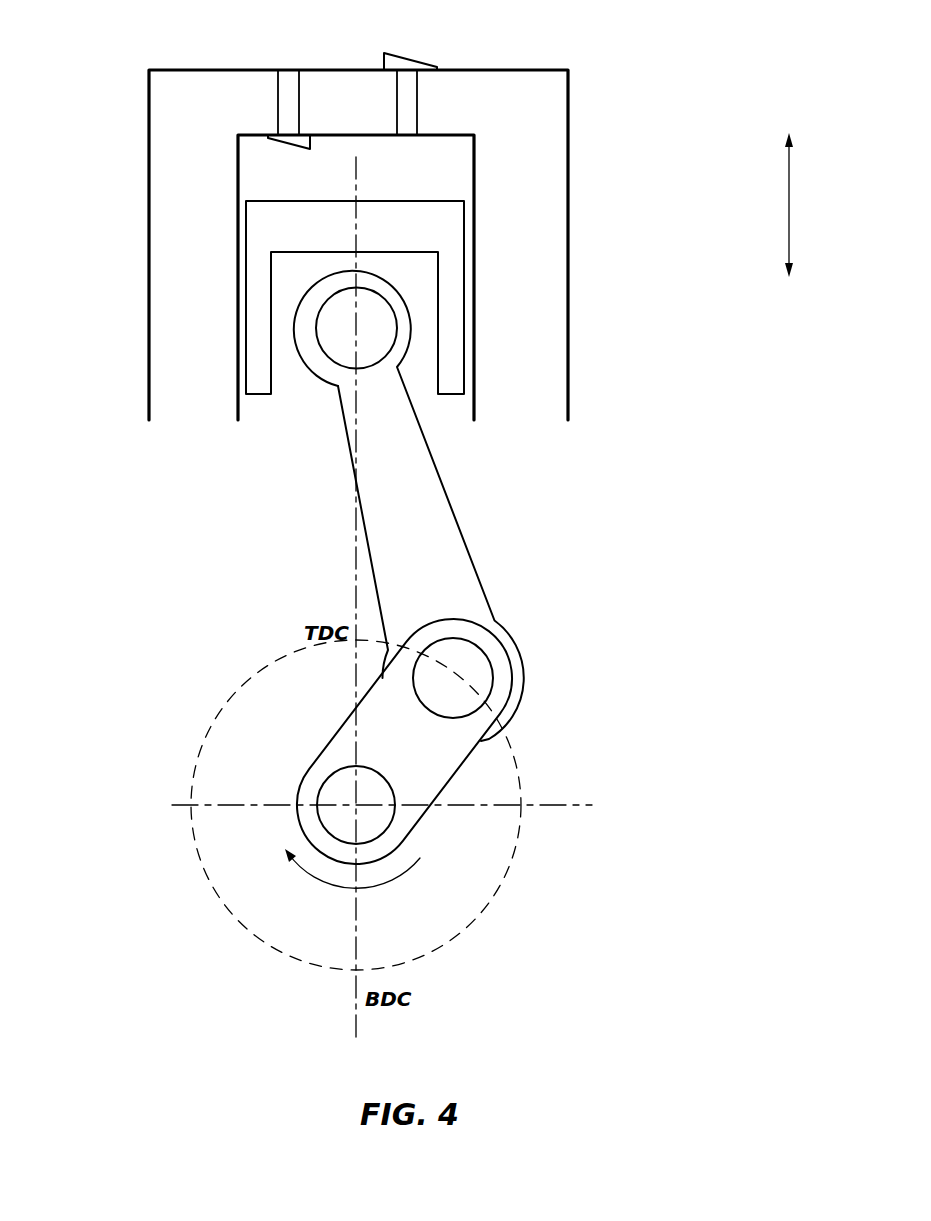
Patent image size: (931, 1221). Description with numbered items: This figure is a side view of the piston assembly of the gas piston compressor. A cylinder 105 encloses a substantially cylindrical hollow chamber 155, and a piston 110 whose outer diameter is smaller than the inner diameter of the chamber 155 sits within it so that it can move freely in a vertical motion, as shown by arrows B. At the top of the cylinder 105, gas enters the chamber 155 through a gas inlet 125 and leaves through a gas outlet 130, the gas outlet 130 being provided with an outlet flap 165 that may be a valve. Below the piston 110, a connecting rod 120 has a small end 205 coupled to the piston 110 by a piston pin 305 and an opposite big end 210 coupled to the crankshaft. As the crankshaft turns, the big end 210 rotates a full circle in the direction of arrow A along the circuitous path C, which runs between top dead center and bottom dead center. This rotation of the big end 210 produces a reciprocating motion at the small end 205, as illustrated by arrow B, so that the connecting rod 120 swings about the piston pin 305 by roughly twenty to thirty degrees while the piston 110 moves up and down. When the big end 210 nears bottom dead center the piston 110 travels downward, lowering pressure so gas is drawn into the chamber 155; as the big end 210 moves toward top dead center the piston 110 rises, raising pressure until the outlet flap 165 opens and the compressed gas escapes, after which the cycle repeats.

The cylinder 105 is at (172, 182).
The hollow chamber 155 is at (443, 163).
The gas inlet 125 is at (286, 97).
The gas outlet 130 is at (408, 108).
The outlet flap 165 is at (295, 143).
The piston 110 is at (447, 228).
The piston pin 305 is at (330, 336).
The connecting rod 120 is at (440, 533).
The small end 205 is at (421, 348).
The big end 210 is at (539, 662).
The arrow A is at (352, 880).
The arrows B is at (798, 205).
The circuitous path C is at (500, 887).